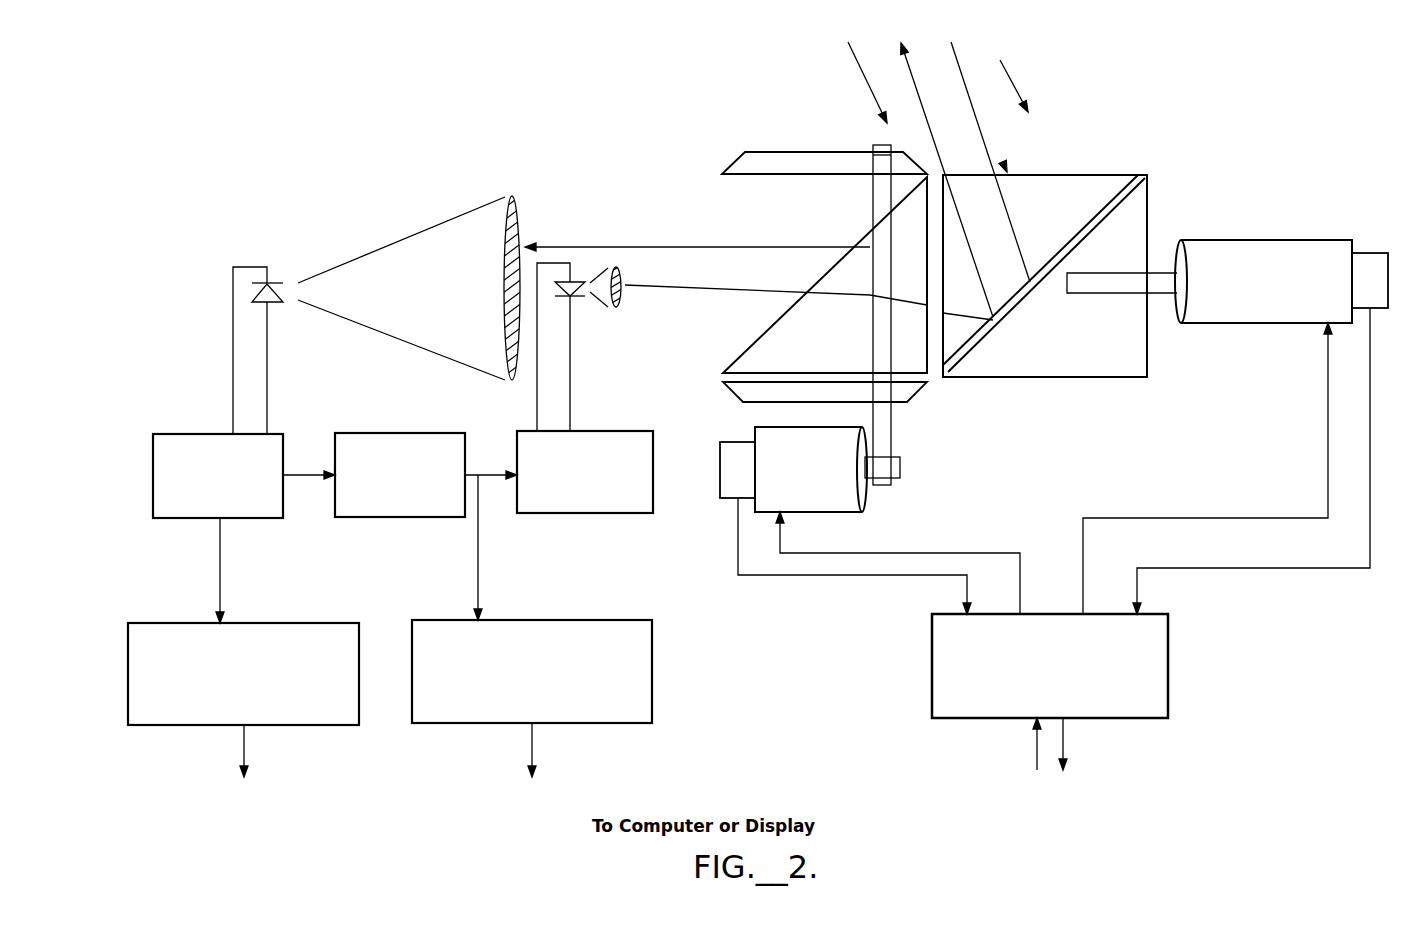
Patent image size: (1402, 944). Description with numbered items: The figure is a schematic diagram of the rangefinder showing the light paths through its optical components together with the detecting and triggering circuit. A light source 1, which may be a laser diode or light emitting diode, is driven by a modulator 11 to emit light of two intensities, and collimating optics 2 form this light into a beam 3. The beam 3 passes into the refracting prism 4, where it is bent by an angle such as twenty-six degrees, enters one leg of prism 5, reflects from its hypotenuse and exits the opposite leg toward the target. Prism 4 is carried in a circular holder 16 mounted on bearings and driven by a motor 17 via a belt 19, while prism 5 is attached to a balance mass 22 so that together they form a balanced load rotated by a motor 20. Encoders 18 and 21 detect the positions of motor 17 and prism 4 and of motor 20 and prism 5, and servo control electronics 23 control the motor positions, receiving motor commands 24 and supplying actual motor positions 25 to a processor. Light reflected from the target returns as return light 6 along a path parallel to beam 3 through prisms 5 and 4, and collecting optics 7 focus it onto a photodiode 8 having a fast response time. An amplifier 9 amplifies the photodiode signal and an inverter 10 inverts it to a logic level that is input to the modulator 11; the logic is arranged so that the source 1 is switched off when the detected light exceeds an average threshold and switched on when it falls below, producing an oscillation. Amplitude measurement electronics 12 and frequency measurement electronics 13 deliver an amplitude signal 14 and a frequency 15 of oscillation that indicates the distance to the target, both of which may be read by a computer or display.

The light source 1 is at (572, 347).
The collimating optics 2 is at (626, 298).
The beam 3 is at (809, 285).
The refracting prism 4 is at (825, 276).
The prism 5 is at (1045, 276).
The return light 6 is at (939, 179).
The collecting optics 7 is at (658, 271).
The photodiode 8 is at (345, 315).
The amplifier 9 is at (244, 528).
The inverter 10 is at (426, 526).
The modulator 11 is at (585, 472).
The amplitude measurement electronics 12 is at (243, 674).
The frequency measurement electronics 13 is at (532, 671).
The amplitude signal 14 is at (217, 768).
The frequency 15 is at (503, 765).
The circular holder 16 is at (768, 160).
The motor 17 is at (887, 520).
The encoder 18 is at (845, 528).
The belt 19 is at (905, 315).
The motor 20 is at (1217, 427).
The encoder 21 is at (1262, 433).
The balance mass 22 is at (1092, 322).
The servo control electronics 23 is at (1050, 666).
The motor commands 24 is at (948, 759).
The motor positions 25 is at (1135, 759).